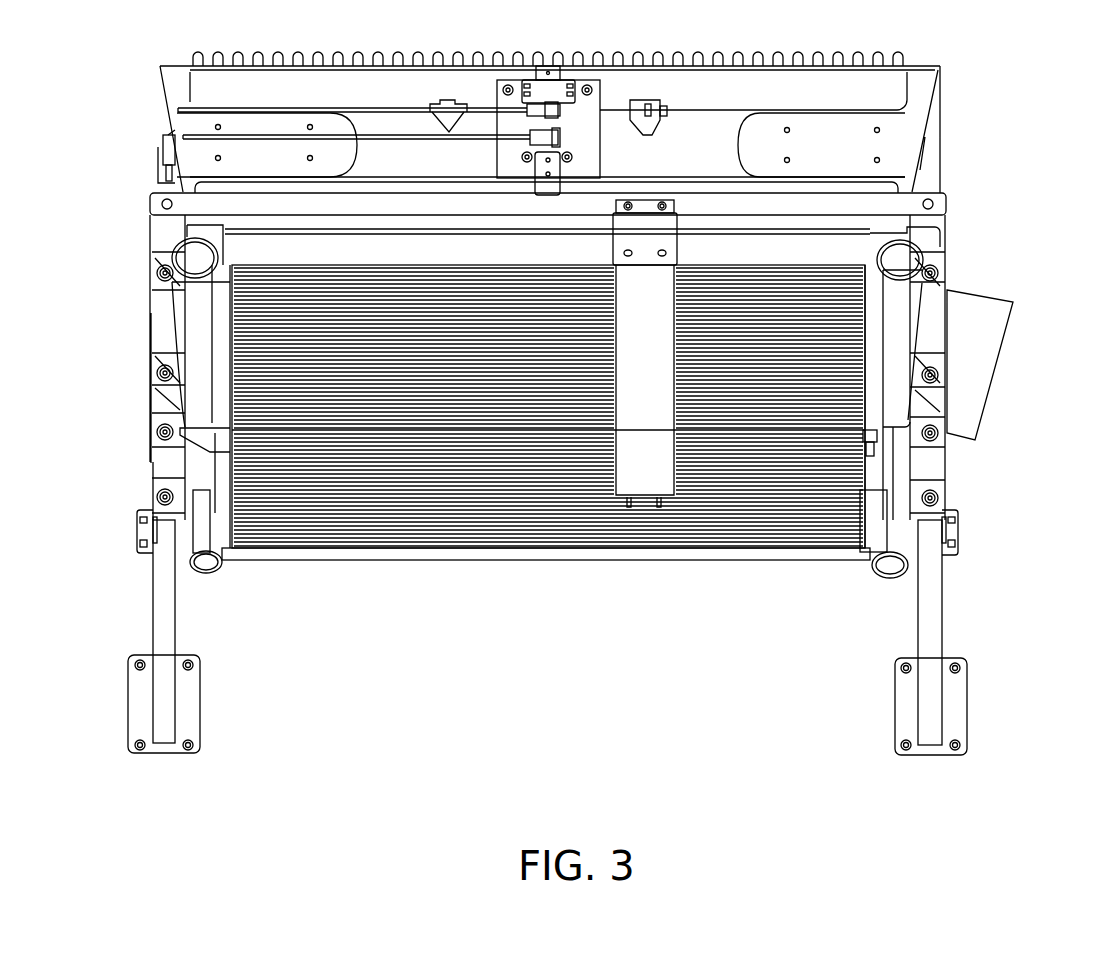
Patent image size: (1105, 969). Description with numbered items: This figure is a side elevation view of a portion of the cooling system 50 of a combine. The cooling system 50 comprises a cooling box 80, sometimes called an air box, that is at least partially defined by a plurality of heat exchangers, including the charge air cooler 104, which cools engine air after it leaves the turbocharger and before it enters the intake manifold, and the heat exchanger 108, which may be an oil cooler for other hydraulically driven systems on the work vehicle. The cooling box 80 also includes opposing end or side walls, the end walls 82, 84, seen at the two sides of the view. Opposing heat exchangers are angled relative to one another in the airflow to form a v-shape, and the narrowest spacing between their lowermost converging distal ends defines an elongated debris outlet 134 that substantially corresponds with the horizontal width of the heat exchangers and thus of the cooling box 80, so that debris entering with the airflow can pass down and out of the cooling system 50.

The cooling system 50 is at (1007, 169).
The cooling box 80 is at (107, 238).
The end wall 82 is at (157, 340).
The end wall 84 is at (933, 310).
The charge air cooler 104 is at (265, 381).
The oil cooler 108 is at (413, 530).
The debris outlet 134 is at (576, 566).